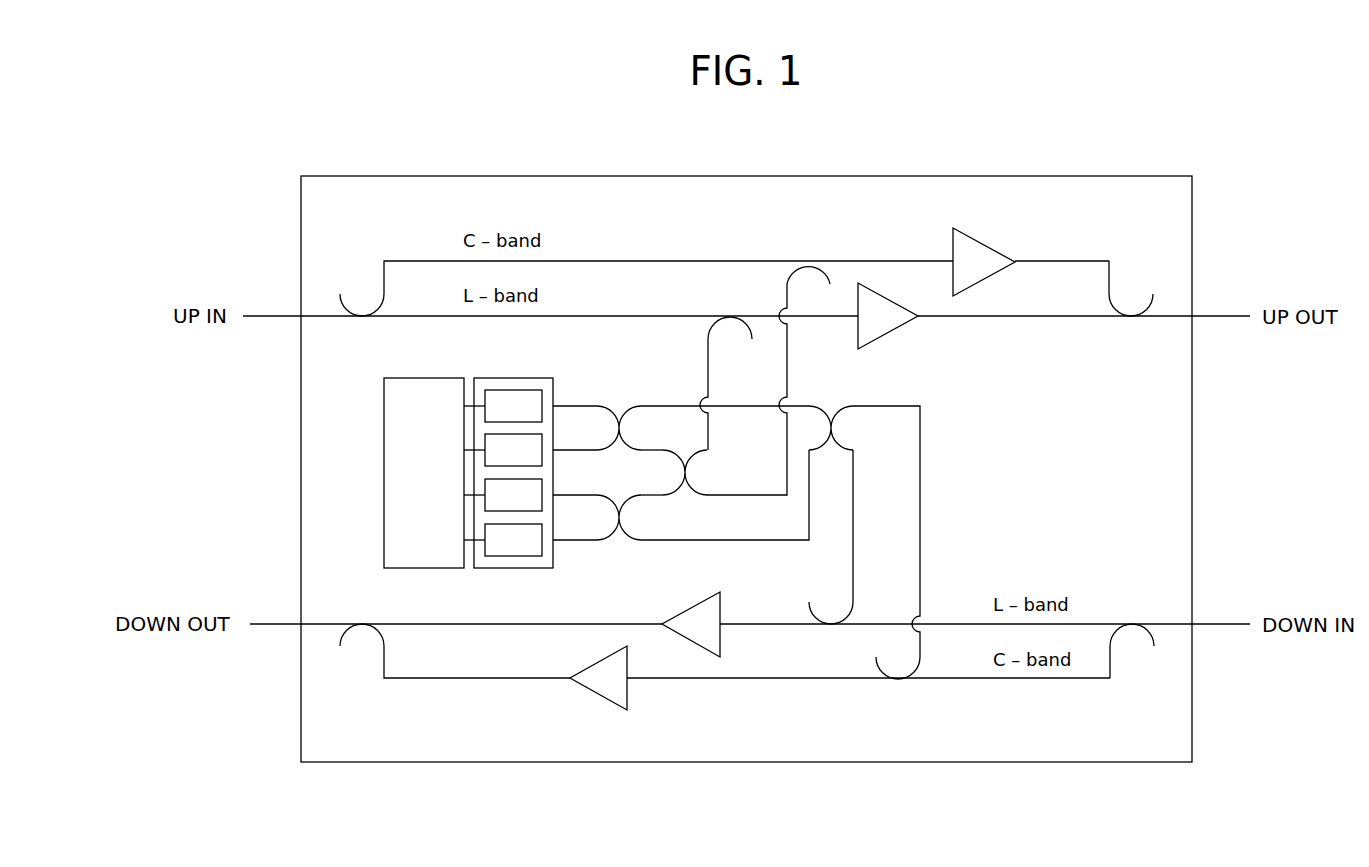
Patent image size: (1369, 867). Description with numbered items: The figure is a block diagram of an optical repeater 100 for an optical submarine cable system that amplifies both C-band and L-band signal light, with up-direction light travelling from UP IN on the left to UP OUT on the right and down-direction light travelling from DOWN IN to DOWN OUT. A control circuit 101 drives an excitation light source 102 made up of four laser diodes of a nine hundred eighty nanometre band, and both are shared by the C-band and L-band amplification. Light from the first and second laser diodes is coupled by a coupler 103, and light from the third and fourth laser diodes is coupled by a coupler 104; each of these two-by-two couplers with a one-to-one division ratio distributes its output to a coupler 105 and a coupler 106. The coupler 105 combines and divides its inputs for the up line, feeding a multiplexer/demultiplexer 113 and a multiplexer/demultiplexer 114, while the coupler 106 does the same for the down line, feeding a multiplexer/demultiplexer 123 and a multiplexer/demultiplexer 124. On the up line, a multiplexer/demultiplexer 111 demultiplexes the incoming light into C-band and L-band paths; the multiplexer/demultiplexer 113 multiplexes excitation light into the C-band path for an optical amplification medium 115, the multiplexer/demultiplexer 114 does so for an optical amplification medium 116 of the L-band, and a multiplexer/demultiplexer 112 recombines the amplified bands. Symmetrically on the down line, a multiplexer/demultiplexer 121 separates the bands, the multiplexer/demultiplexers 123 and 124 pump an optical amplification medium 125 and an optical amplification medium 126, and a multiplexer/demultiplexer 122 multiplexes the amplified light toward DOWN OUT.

The optical repeater 100 is at (970, 176).
The control circuit 101 is at (441, 376).
The excitation light source 102 is at (529, 376).
The coupler 103 is at (615, 392).
The coupler 104 is at (617, 548).
The coupler 105 is at (686, 502).
The coupler 106 is at (827, 403).
The multiplexer/demultiplexer 111 is at (363, 322).
The multiplexer/demultiplexer 112 is at (1131, 322).
The multiplexer/demultiplexer 113 is at (810, 258).
The multiplexer/demultiplexer 114 is at (735, 305).
The optical amplification medium 115 is at (988, 241).
The optical amplification medium 116 is at (900, 338).
The multiplexer/demultiplexer 121 is at (1133, 622).
The multiplexer/demultiplexer 122 is at (362, 618).
The multiplexer/demultiplexer 123 is at (880, 694).
The multiplexer/demultiplexer 124 is at (830, 632).
The optical amplification medium 125 is at (593, 700).
The optical amplification medium 126 is at (690, 610).